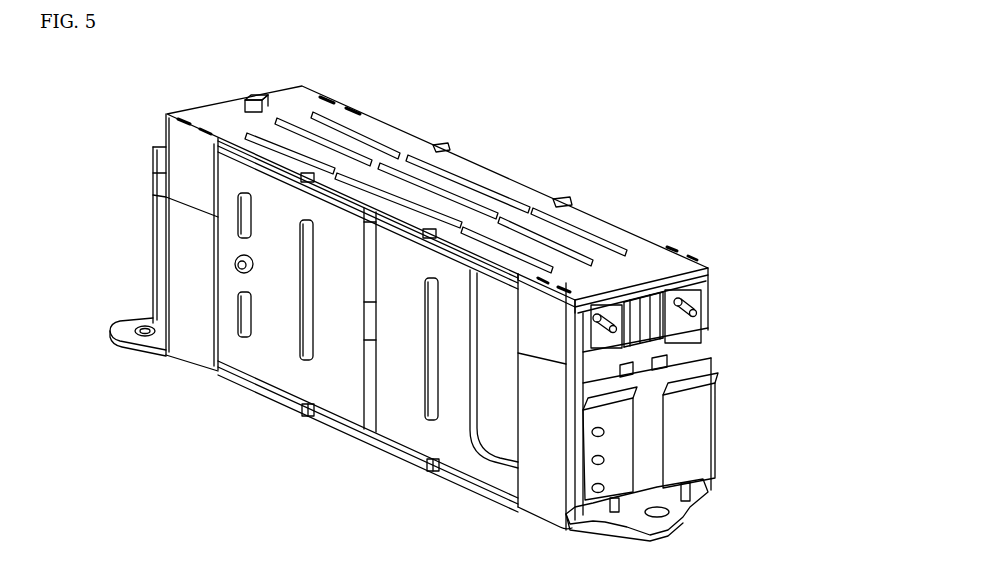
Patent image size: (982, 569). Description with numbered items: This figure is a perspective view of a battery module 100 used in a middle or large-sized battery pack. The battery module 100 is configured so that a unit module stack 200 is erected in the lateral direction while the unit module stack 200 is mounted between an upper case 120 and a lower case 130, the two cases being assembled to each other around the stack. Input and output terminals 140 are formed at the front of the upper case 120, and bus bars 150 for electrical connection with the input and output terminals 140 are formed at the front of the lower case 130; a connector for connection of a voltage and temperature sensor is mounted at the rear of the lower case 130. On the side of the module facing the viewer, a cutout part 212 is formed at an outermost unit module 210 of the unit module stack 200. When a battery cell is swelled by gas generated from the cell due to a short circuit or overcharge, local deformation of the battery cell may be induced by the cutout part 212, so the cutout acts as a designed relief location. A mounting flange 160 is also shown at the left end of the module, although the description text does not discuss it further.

The battery module 100 is at (101, 74).
The upper case 120 is at (474, 161).
The lower case 130 is at (619, 407).
The input and output terminals 140 is at (698, 307).
The bus bars 150 is at (693, 323).
The mounting flange 160 is at (153, 213).
The unit module stack 200 is at (292, 308).
The outermost unit module 210 is at (276, 359).
The cutout part 212 is at (495, 420).